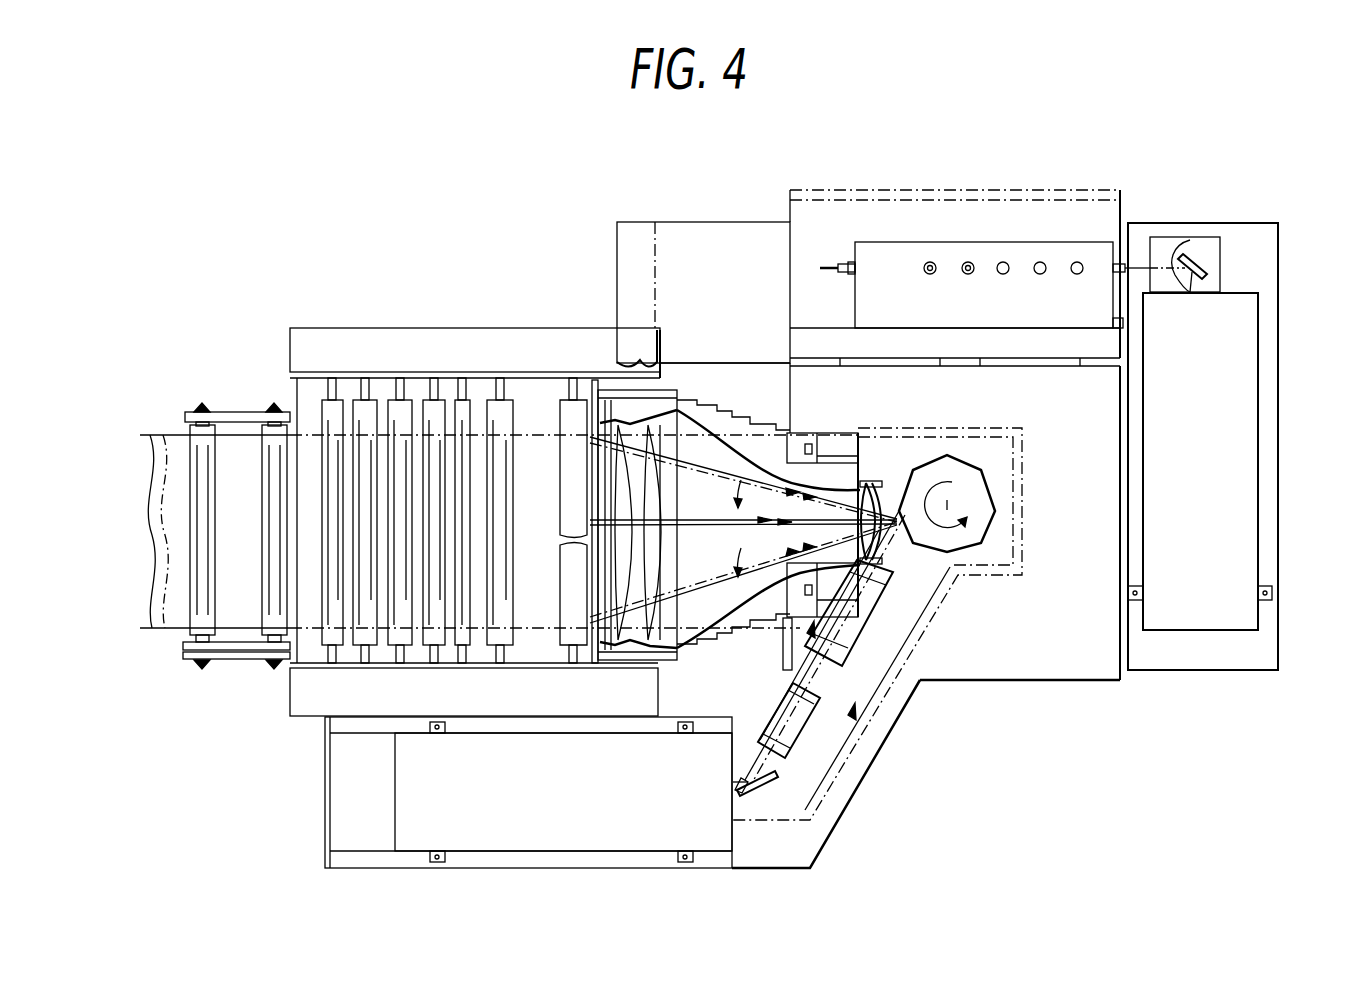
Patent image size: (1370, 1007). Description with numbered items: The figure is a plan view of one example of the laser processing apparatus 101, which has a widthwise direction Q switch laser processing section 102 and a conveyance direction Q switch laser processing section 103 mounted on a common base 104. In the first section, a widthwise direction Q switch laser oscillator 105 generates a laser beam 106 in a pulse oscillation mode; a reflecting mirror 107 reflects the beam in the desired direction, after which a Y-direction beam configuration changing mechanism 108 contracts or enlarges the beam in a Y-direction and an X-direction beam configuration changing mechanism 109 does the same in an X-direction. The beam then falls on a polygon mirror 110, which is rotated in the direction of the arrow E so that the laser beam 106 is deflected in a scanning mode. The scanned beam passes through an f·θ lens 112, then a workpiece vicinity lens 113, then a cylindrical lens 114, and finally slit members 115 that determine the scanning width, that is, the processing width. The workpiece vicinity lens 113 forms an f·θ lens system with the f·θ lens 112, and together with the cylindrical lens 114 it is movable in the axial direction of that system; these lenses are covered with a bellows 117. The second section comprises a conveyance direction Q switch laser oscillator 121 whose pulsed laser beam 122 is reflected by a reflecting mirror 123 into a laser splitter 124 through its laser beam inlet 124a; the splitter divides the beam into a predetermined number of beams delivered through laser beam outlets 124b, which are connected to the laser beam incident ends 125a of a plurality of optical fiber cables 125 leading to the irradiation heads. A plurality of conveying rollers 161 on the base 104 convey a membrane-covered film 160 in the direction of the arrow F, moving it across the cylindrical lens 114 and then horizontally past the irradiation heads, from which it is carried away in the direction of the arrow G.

The laser processing apparatus 101 is at (884, 120).
The widthwise direction Q switch laser processing section 102 is at (830, 758).
The conveyance direction Q switch laser processing section 103 is at (1136, 213).
The common base 104 is at (1093, 656).
The widthwise direction Q switch laser oscillator 105 is at (520, 823).
The laser beam 106 is at (888, 478).
The reflecting mirror 107 is at (775, 778).
The Y-direction beam configuration changing mechanism 108 is at (803, 718).
The X-direction beam configuration changing mechanism 109 is at (853, 650).
The polygon mirror 110 is at (962, 540).
The f·θ lens 112 is at (868, 483).
The workpiece vicinity lens 113 is at (662, 425).
The cylindrical lens 114 is at (612, 430).
The slit members 115 is at (598, 415).
The bellows 117 is at (762, 425).
The conveyance direction Q switch laser oscillator 121 is at (1228, 428).
The laser beam 122 is at (1200, 290).
The reflecting mirror 123 is at (1200, 262).
The laser splitter 124 is at (1050, 245).
The laser beam inlet 124a is at (1120, 262).
The laser beam outlets 124b is at (930, 264).
The optical fiber cables 125 is at (838, 264).
The laser beam incident ends 125a is at (850, 262).
The membrane-covered film 160 is at (178, 425).
The conveying rollers 161 is at (190, 638).
The direction of rotation of polygon mirror E is at (947, 478).
The film conveyance direction F is at (160, 523).
The film conveyance direction G is at (207, 533).